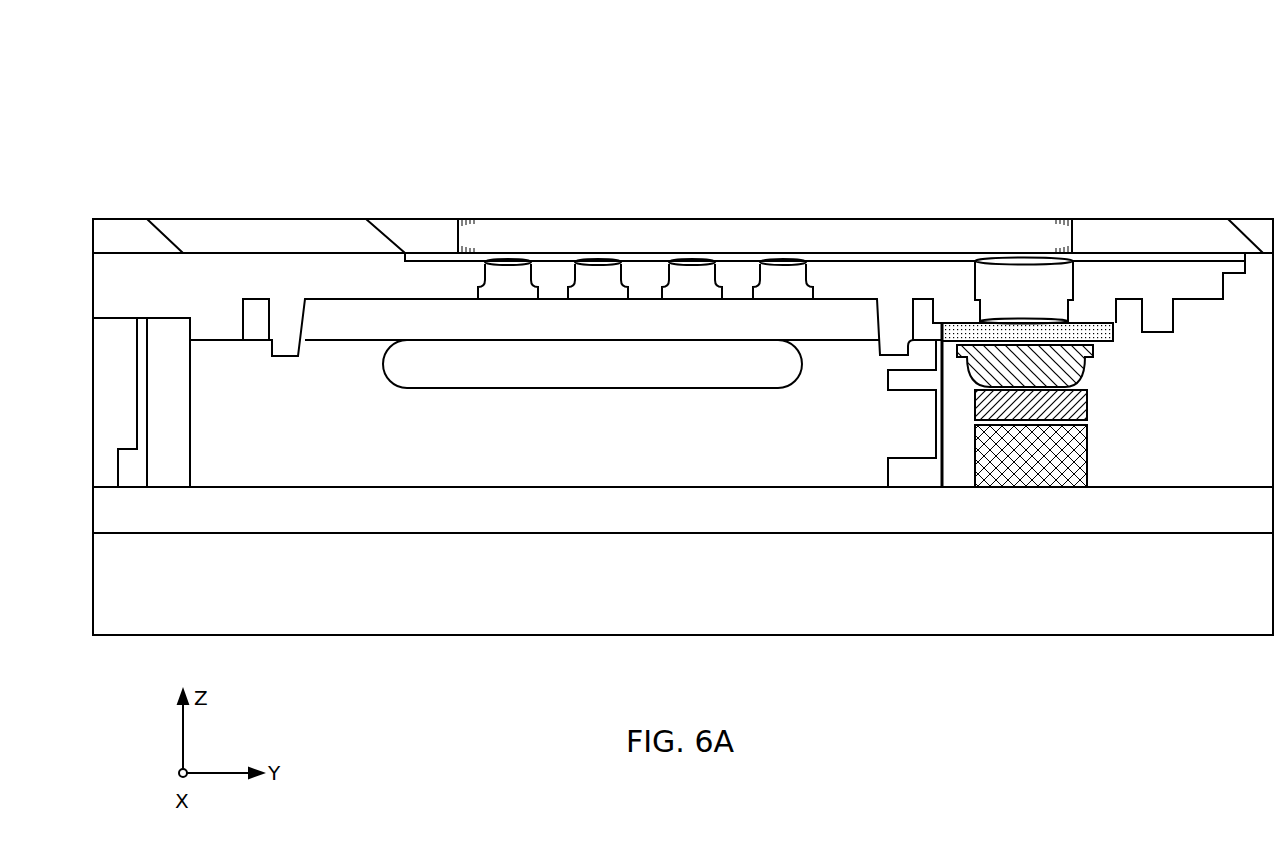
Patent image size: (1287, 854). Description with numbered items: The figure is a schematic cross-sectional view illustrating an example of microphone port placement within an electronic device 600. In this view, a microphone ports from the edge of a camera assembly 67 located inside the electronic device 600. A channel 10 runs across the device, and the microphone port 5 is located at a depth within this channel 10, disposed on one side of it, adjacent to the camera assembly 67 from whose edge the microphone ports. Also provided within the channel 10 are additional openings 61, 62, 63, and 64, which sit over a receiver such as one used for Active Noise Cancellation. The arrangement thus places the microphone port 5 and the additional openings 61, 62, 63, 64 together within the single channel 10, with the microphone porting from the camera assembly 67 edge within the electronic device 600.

The electronic device 600 is at (435, 218).
The channel 10 is at (507, 230).
The additional opening 61 is at (510, 280).
The additional opening 62 is at (596, 280).
The additional opening 63 is at (690, 280).
The additional opening 64 is at (783, 280).
The microphone port 5 is at (1027, 280).
The camera assembly 67 is at (1058, 458).